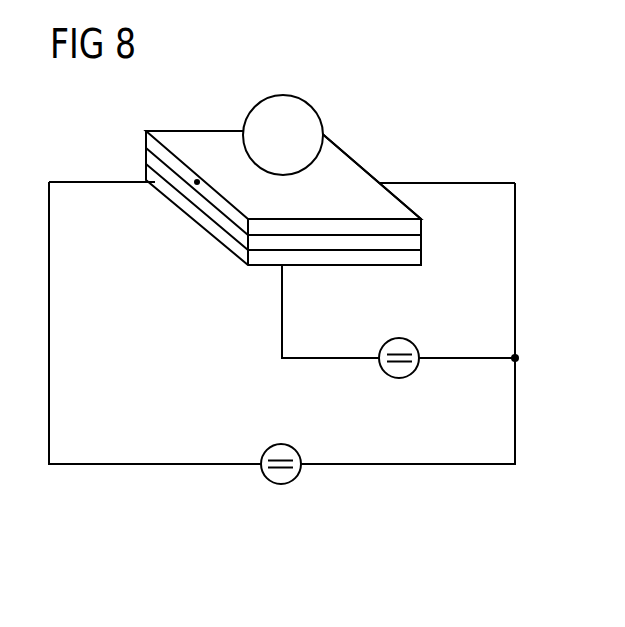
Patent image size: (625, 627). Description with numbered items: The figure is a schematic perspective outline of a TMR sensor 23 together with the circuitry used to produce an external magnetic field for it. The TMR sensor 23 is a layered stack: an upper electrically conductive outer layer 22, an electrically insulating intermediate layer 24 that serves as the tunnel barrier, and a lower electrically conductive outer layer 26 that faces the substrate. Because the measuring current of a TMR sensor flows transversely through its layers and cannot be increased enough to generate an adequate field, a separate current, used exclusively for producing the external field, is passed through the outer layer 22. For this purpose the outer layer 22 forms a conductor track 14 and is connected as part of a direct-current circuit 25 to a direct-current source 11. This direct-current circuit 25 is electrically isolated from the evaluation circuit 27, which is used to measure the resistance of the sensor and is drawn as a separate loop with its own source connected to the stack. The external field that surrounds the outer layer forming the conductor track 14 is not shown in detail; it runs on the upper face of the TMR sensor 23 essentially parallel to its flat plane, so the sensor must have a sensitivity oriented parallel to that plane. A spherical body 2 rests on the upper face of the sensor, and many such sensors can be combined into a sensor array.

The spherical body / sphere 2 is at (308, 130).
The direct-current source 11 is at (282, 485).
The conductor track 14 is at (224, 142).
The outer layer 22 is at (182, 142).
The TMR sensor 23 is at (332, 268).
The intermediate layer 24 is at (237, 228).
The direct-current circuit 25 is at (385, 466).
The outer layer 26 is at (192, 208).
The evaluation circuit 27 is at (462, 358).